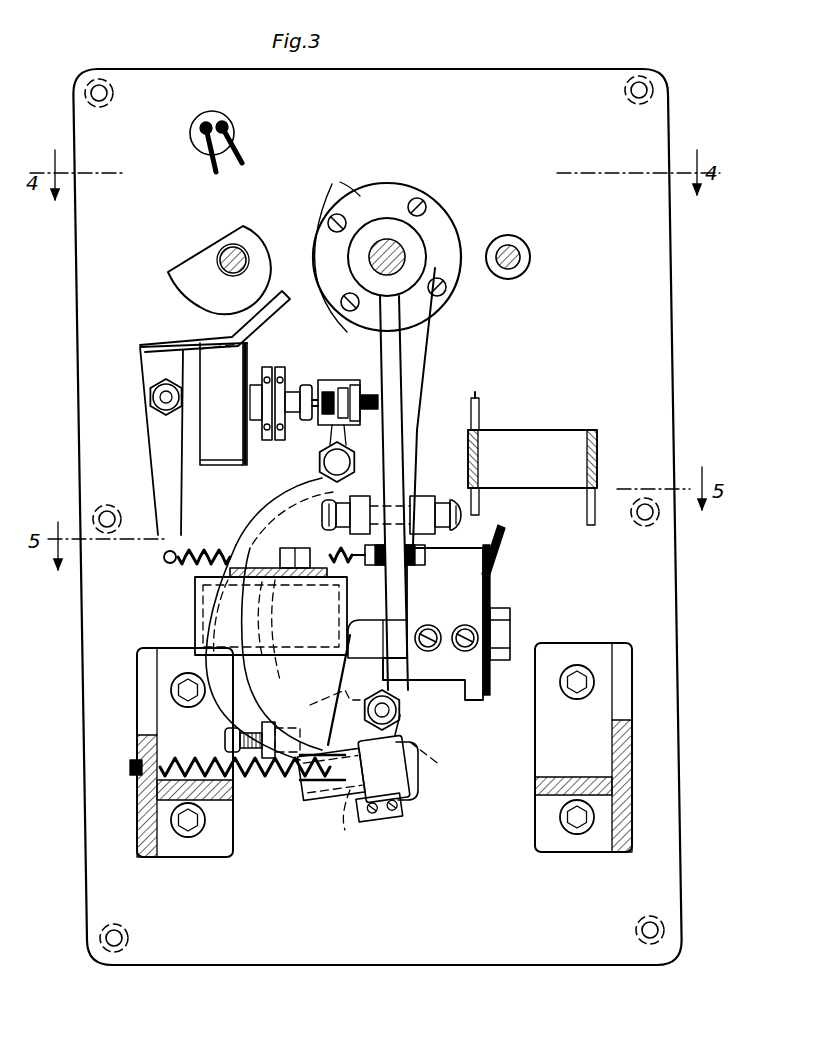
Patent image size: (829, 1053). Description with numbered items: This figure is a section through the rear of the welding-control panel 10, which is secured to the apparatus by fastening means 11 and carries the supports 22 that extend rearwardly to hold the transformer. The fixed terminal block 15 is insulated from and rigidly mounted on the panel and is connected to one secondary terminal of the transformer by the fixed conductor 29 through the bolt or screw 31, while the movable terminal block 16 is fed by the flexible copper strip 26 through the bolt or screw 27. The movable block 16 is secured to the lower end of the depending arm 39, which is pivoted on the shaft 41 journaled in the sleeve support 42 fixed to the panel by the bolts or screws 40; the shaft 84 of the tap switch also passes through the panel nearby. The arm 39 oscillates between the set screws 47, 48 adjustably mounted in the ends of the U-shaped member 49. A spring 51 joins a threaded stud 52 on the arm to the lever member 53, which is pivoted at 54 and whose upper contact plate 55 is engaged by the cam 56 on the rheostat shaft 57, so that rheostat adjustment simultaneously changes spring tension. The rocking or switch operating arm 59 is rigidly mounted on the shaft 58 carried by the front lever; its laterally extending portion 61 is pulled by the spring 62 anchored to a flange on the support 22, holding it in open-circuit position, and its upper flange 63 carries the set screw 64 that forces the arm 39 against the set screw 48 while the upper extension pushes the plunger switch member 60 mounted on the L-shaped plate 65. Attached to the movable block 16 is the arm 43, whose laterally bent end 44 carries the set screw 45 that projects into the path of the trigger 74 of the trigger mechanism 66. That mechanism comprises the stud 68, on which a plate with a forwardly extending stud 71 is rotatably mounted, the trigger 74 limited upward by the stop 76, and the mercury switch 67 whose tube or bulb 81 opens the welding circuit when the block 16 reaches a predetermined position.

The panel 10 is at (540, 78).
The fastening means 11 is at (108, 945).
The fixed welding or terminal block 15 is at (195, 616).
The movable terminal block 16 is at (470, 598).
The supports 22 is at (137, 712).
The copper strip 26 is at (492, 551).
The bolt or screw 27 is at (511, 628).
The fixed conductor 29 is at (278, 592).
The bolt or screw 31 is at (300, 550).
The depending arm 39 is at (402, 358).
The bolts or screws 40 is at (334, 249).
The shaft 41 is at (387, 240).
The sleeve support 42 is at (443, 218).
The arm 43 is at (365, 622).
The laterally bent end 44 is at (300, 714).
The set screw 45 is at (225, 741).
The set screw 47 is at (372, 498).
The set screw 48 is at (424, 503).
The U-shaped member 49 is at (418, 500).
The spring 51 is at (178, 566).
The threaded stud 52 is at (377, 571).
The lever member 53 is at (160, 480).
The pivot 54 is at (148, 395).
The contact plate 55 is at (268, 308).
The cam 56 is at (258, 240).
The shaft 57 is at (226, 252).
The shaft 58 is at (318, 460).
The rocking or switch operating arm 59 is at (240, 503).
The spring-pressed plunger switch member 60 is at (306, 385).
The laterally extending portion 61 is at (398, 797).
The spring 62 is at (250, 780).
The flange 63 is at (330, 380).
The set screw 64 is at (370, 395).
The L-shaped plate 65 is at (272, 367).
The trigger mechanism 66 is at (404, 712).
The mercury switch 67 is at (414, 796).
The shaft or stud 68 is at (404, 722).
The stud 71 is at (355, 782).
The trigger 74 is at (310, 704).
The stop 76 is at (330, 690).
The tube or bulb 81 is at (335, 778).
The shaft 84 is at (530, 257).